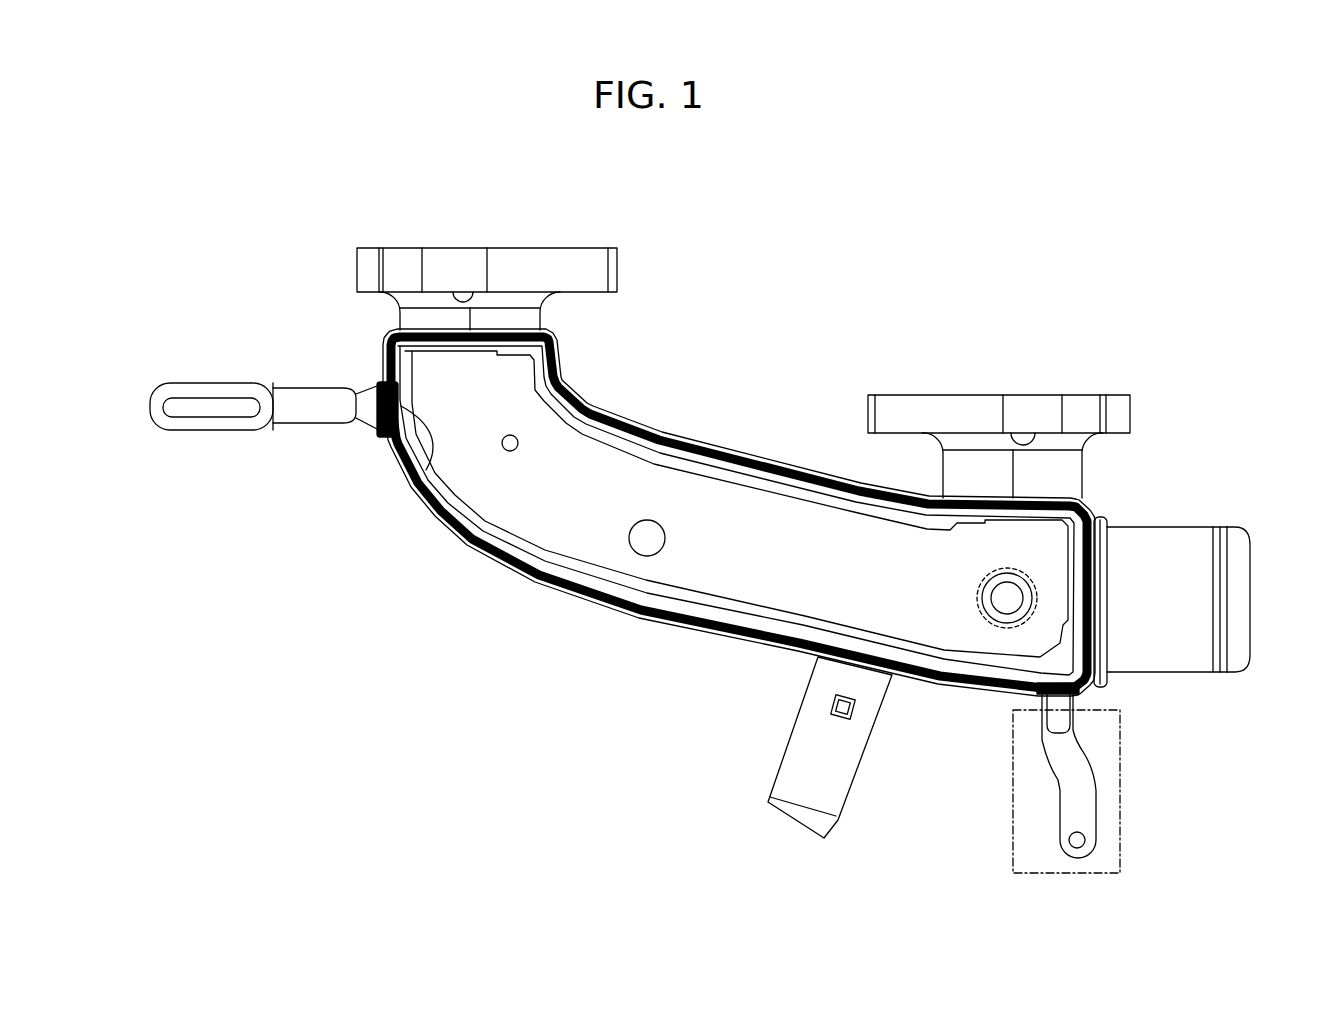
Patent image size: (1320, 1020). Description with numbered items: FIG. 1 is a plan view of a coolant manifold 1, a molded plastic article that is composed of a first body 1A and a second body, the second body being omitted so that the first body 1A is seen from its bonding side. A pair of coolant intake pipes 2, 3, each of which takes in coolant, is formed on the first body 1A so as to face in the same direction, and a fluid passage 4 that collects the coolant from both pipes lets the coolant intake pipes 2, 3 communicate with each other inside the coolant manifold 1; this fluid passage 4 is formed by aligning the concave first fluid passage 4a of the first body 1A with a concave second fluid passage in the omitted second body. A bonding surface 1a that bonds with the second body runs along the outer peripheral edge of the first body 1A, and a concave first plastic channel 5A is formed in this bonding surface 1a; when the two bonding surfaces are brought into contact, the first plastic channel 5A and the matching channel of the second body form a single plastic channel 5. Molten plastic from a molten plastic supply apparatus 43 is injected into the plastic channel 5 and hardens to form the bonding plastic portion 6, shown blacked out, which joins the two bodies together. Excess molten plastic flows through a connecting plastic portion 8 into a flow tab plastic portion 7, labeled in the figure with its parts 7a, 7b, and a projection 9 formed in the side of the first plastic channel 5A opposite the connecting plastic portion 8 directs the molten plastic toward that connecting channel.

The coolant manifold 1 is at (1198, 227).
The first body 1A is at (518, 620).
The bonding surface 1a is at (772, 457).
The coolant intake pipe 2 is at (563, 264).
The coolant intake pipe 3 is at (1032, 400).
The fluid passage 4 is at (637, 490).
The first fluid passage 4a is at (736, 504).
The plastic channel 5 is at (952, 688).
The first plastic channel 5A is at (573, 398).
The bonding plastic portion 6 is at (739, 515).
The flow tab plastic portion 7 is at (347, 470).
The arm shaft portion 7a is at (362, 430).
The arm eye portion 7b is at (277, 430).
The connecting plastic portion 8 is at (374, 392).
The projection 9 is at (420, 490).
The molten plastic supply apparatus 43 is at (1121, 795).